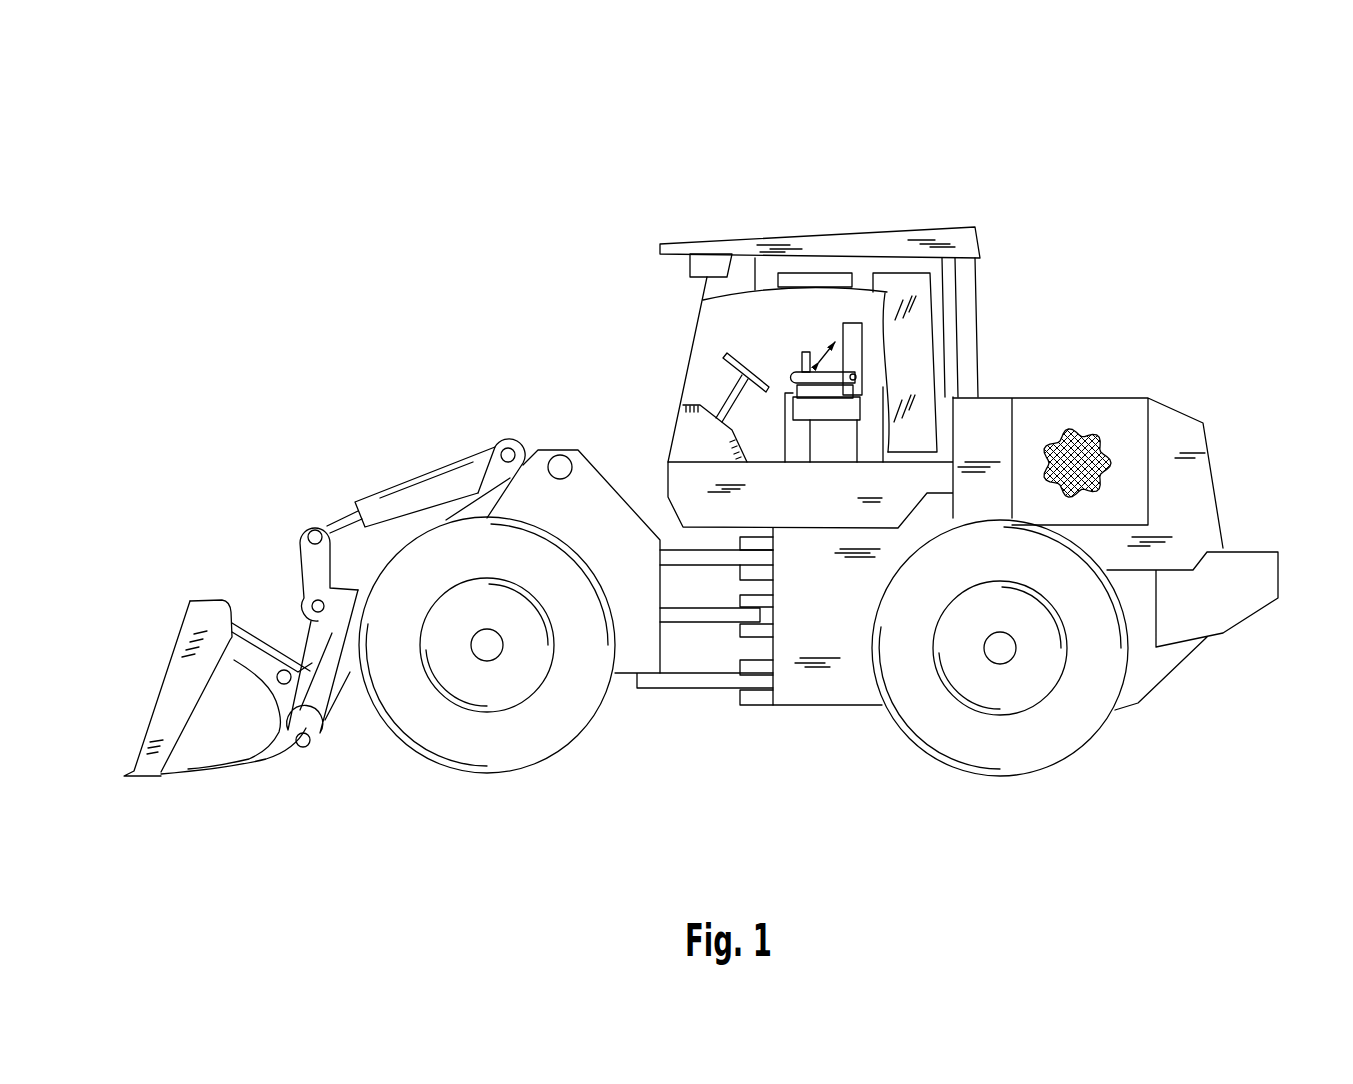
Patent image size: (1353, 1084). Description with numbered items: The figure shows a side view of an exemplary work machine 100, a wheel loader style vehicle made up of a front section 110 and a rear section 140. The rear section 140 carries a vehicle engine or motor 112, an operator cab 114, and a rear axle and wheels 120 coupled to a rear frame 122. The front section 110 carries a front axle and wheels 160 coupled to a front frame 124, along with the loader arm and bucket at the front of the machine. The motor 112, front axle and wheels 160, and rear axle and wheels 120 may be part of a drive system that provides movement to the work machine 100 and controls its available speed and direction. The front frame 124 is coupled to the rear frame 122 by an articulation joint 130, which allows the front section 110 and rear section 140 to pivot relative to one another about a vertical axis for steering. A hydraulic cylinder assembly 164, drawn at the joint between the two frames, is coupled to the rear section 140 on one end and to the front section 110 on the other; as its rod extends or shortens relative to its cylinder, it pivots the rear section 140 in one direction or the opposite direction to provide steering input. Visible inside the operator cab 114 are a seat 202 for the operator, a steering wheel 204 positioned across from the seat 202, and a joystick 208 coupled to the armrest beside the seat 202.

The work machine 100 is at (497, 172).
The front section 110 is at (497, 430).
The motor 112 is at (1100, 423).
The operator cab 114 is at (900, 227).
The rear axle and wheels 120 is at (1032, 782).
The rear frame 122 is at (827, 706).
The front frame 124 is at (622, 677).
The articulation joint 130 is at (678, 542).
The rear section 140 is at (1057, 363).
The front axle and wheels 160 is at (460, 782).
The hydraulic cylinder assembly 164 is at (705, 627).
The seat 202 is at (853, 323).
The steering wheel 204 is at (720, 367).
The joystick 208 is at (807, 352).